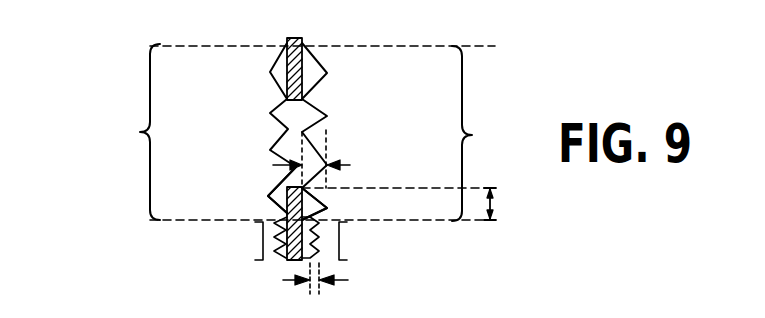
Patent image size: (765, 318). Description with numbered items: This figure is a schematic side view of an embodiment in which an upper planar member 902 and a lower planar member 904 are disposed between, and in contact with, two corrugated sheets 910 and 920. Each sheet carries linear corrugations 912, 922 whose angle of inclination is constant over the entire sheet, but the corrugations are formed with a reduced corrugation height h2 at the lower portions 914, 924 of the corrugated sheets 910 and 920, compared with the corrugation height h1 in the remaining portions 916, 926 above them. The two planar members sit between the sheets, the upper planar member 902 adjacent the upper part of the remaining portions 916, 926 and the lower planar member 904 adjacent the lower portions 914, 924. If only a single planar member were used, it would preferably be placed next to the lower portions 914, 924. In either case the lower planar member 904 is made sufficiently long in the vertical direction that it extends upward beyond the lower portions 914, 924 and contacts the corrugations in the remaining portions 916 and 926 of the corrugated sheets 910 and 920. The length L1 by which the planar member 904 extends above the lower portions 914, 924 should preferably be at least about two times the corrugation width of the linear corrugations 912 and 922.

The upper planar member 902 is at (303, 38).
The lower planar member 904 is at (288, 260).
The corrugated sheet 910 is at (255, 114).
The linear corrugation 912 is at (268, 196).
The lower portion 914 is at (256, 238).
The remaining portion 916 is at (126, 132).
The corrugated sheet 920 is at (343, 115).
The linear corrugation 922 is at (327, 208).
The lower portion 924 is at (340, 238).
The remaining portion 926 is at (479, 133).
The corrugation height h1 is at (325, 165).
The reduced corrugation height h2 is at (331, 278).
The length of planar member extending above lower portions L1 is at (501, 204).